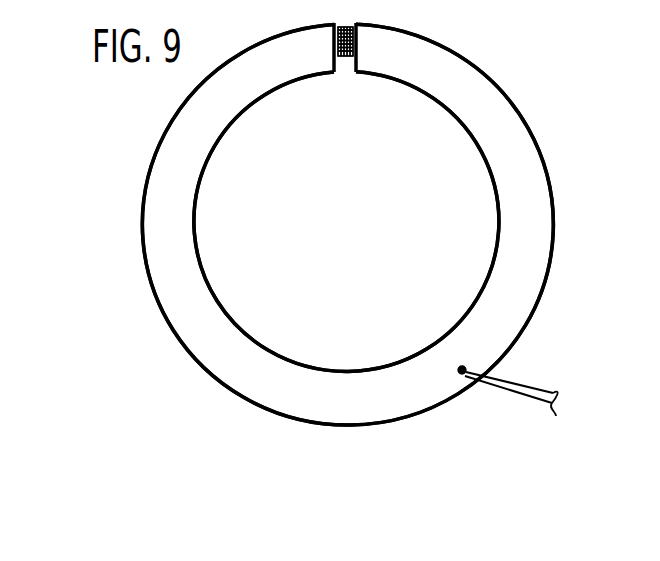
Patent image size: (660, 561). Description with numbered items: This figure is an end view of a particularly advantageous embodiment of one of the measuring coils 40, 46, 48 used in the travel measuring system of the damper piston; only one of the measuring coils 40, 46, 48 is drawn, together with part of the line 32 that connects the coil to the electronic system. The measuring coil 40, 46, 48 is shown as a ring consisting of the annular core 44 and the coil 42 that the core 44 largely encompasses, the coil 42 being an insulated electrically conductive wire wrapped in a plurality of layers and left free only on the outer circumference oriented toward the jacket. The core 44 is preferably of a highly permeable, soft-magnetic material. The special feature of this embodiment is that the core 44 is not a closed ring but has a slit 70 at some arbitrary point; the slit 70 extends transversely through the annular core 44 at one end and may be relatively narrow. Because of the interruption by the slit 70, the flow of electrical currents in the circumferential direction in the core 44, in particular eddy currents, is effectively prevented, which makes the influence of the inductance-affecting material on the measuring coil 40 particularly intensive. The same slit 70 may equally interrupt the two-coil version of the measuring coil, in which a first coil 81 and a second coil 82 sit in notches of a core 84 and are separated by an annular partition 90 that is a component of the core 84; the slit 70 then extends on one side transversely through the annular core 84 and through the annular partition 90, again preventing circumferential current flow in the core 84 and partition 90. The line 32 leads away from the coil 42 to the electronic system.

The measuring coil 40 is at (313, 224).
The measuring coil 46 is at (313, 224).
The measuring coil 48 is at (146, 310).
The core 44 is at (372, 224).
The core 84 is at (372, 224).
The partition 90 is at (466, 83).
The slit 70 is at (339, 74).
The coil 42 is at (346, 199).
The first coil 81 is at (346, 199).
The second coil 82 is at (358, 40).
The line 32 is at (553, 395).